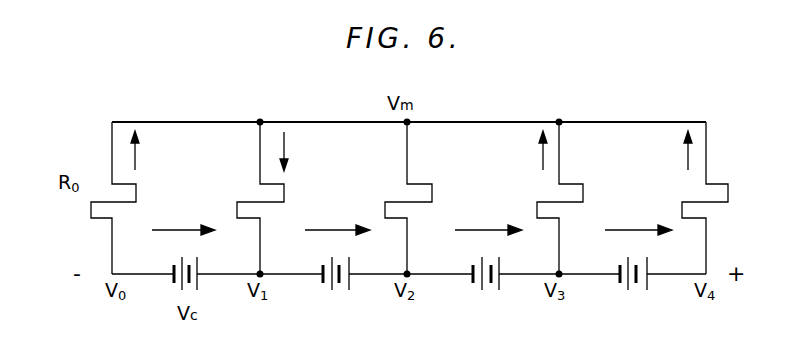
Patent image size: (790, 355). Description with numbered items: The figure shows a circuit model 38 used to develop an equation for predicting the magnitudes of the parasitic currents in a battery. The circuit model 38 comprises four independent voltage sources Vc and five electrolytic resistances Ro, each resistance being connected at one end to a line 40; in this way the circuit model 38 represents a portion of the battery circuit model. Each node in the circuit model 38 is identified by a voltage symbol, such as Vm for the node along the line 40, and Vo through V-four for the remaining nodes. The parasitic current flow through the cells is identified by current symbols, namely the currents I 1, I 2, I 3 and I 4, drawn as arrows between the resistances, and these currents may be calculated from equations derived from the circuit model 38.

The line 40 is at (207, 121).
The circuit model 38 is at (468, 296).
The current I1 through first cell 1 is at (183, 218).
The current I2 through second cell 2 is at (337, 218).
The current I3 through third cell 3 is at (488, 218).
The current I4 through fourth cell 4 is at (638, 218).